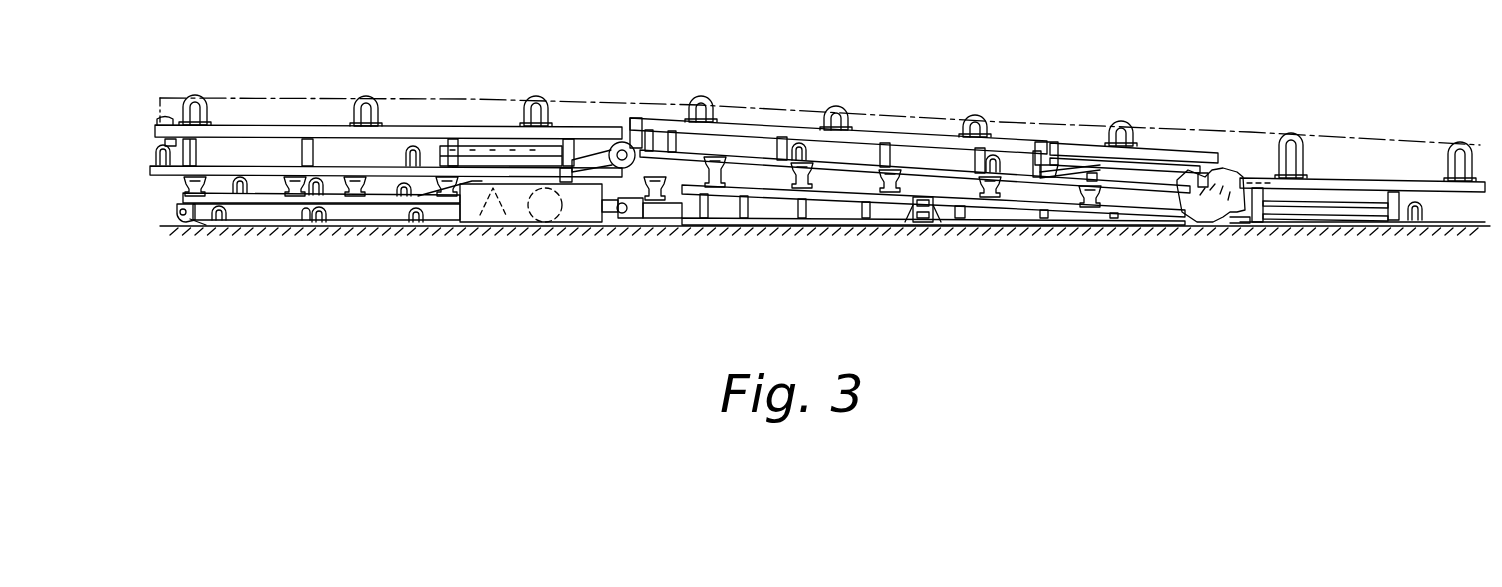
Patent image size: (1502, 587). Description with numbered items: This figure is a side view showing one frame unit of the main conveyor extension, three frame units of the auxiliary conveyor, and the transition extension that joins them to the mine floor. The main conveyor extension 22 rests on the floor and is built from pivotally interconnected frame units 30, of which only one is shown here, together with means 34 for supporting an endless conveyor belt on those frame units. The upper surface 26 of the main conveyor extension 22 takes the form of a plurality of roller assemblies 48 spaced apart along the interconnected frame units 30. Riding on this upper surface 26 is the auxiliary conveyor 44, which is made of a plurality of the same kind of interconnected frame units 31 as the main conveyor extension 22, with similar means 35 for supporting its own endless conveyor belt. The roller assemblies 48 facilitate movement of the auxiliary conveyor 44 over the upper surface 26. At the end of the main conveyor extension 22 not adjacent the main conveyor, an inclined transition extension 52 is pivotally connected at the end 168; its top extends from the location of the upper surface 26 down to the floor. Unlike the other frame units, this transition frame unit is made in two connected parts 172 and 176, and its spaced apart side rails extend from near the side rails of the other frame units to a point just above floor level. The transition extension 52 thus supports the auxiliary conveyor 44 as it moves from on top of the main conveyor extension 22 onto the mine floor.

The main conveyor extension 22 is at (199, 230).
The upper surface 26 is at (358, 166).
The frame unit 30 is at (442, 222).
The frame unit 31 is at (300, 147).
The means for supporting an endless conveyor belt 34 is at (403, 197).
The means for supporting an endless conveyor belt 35 is at (373, 97).
The auxiliary conveyor 44 is at (785, 131).
The roller assembly 48 is at (294, 182).
The inclined transition extension 52 is at (829, 230).
The end 168 is at (620, 212).
The connected part 172 is at (786, 227).
The connected part 176 is at (1055, 227).